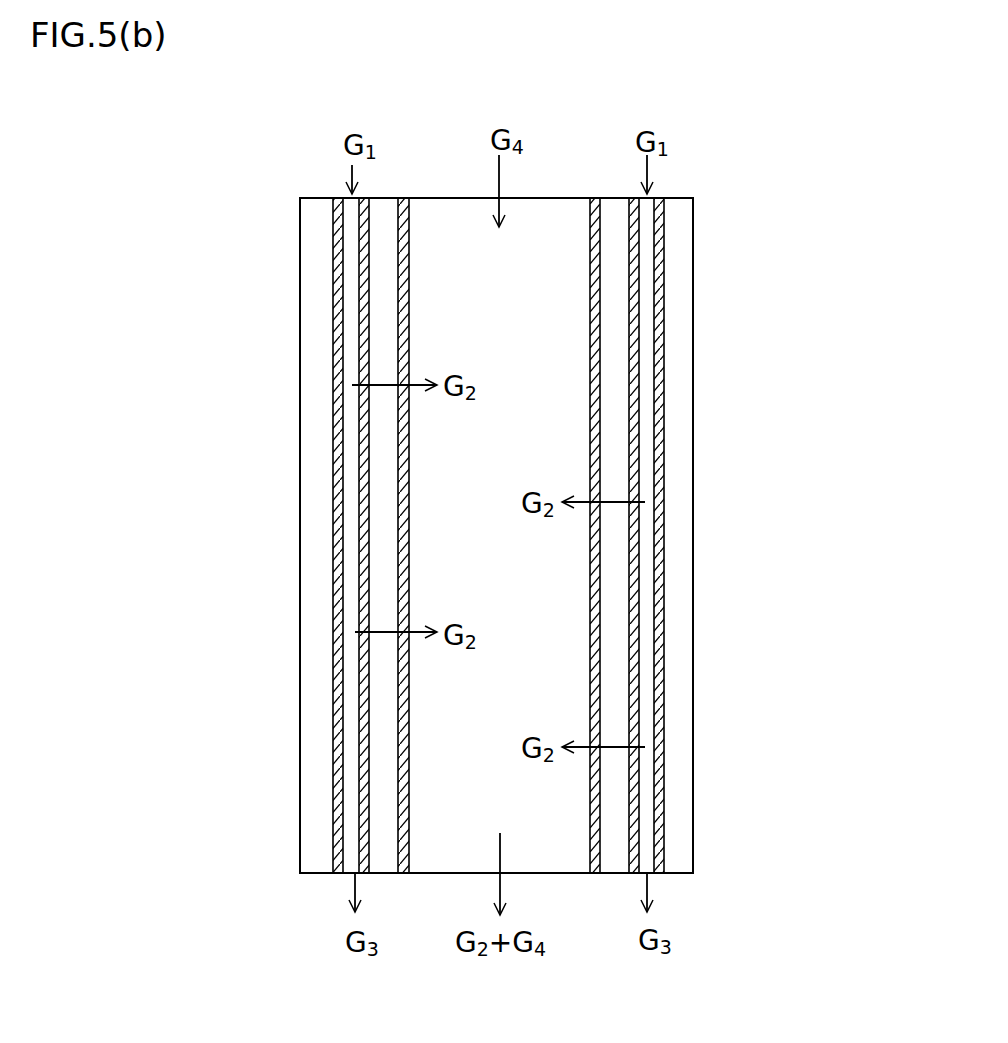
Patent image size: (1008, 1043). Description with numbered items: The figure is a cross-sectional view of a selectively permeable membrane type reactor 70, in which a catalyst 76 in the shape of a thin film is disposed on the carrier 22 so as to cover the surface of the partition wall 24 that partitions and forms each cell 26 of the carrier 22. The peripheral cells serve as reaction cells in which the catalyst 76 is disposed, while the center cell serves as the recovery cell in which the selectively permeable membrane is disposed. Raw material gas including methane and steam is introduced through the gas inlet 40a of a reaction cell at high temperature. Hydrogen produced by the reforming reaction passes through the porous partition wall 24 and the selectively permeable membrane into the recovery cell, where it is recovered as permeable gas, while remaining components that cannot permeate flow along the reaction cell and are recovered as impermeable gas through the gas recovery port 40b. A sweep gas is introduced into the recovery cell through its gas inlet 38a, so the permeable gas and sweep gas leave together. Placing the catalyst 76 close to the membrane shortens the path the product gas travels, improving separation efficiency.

The carrier 22 is at (694, 578).
The partition wall 24 is at (383, 205).
The cell 26 is at (334, 411).
The gas inlet 38a is at (541, 195).
The gas inlet 40a is at (340, 197).
The gas recovery port 40b is at (346, 877).
The selectively permeable membrane type reactor 70 is at (767, 503).
The catalyst 76 is at (338, 740).